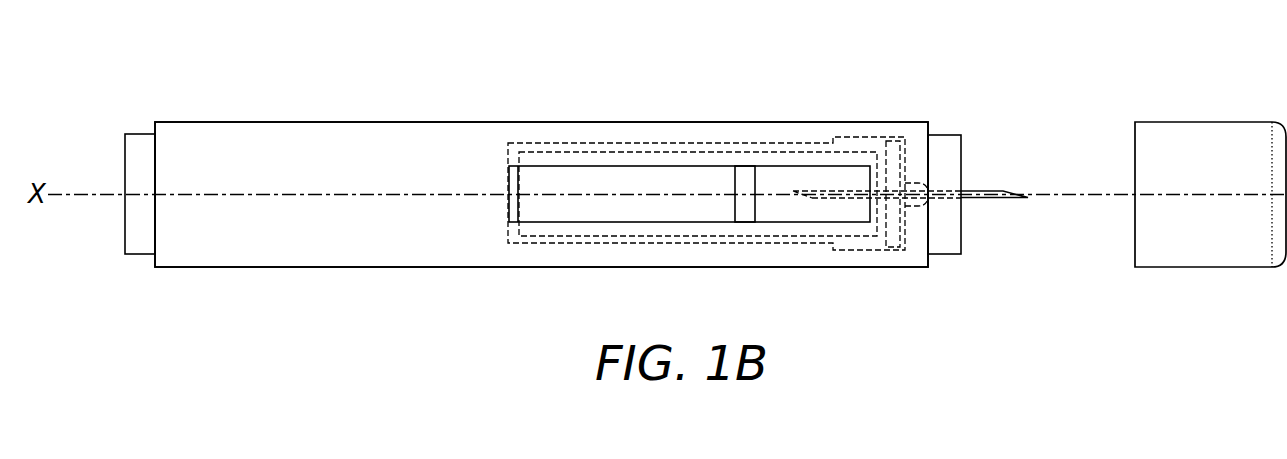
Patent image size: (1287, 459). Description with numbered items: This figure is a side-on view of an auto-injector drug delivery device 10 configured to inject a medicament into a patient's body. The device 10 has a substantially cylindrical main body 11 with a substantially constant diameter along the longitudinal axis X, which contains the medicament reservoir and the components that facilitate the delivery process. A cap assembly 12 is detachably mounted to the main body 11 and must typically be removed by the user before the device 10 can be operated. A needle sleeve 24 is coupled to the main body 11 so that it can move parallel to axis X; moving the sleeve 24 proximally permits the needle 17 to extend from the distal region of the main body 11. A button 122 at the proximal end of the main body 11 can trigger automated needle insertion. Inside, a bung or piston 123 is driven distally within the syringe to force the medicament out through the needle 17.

The drug delivery device 10 is at (885, 82).
The main body 11 is at (739, 132).
The cap assembly 12 is at (1207, 131).
The needle 17 is at (1000, 192).
The needle sleeve 24 is at (952, 144).
The button 122 is at (140, 245).
The piston 123 is at (745, 213).